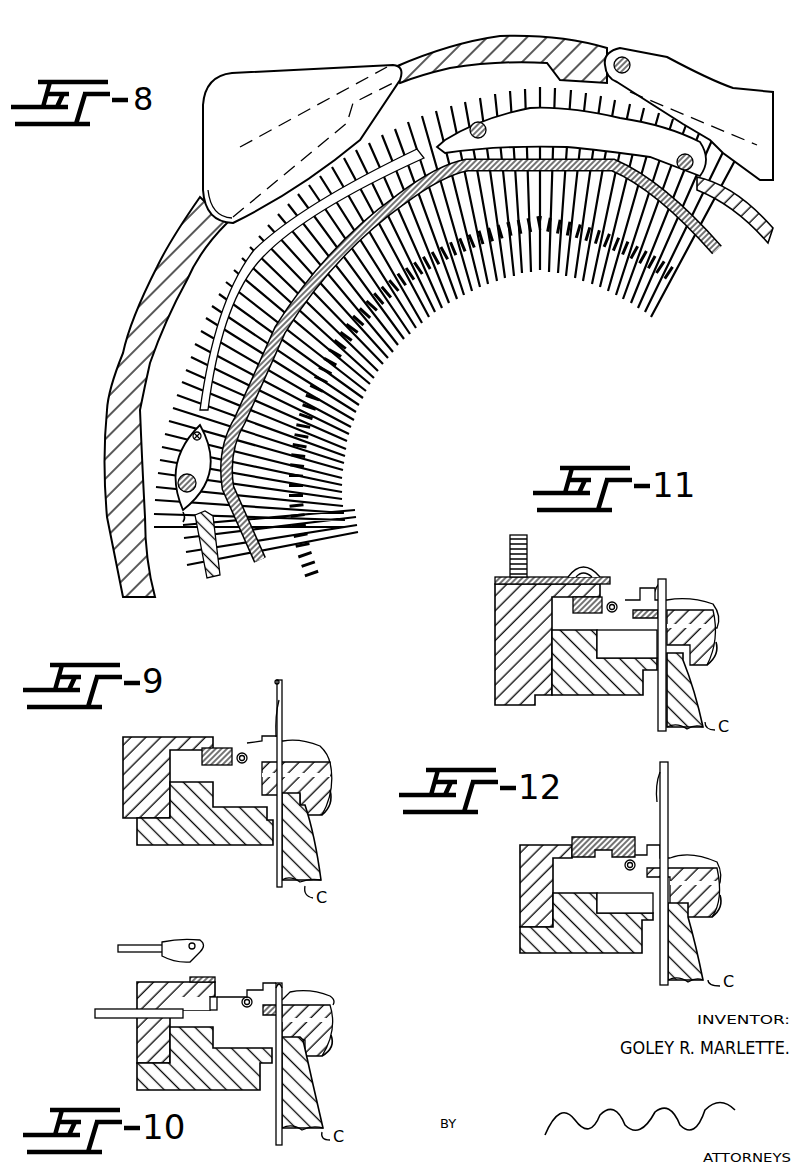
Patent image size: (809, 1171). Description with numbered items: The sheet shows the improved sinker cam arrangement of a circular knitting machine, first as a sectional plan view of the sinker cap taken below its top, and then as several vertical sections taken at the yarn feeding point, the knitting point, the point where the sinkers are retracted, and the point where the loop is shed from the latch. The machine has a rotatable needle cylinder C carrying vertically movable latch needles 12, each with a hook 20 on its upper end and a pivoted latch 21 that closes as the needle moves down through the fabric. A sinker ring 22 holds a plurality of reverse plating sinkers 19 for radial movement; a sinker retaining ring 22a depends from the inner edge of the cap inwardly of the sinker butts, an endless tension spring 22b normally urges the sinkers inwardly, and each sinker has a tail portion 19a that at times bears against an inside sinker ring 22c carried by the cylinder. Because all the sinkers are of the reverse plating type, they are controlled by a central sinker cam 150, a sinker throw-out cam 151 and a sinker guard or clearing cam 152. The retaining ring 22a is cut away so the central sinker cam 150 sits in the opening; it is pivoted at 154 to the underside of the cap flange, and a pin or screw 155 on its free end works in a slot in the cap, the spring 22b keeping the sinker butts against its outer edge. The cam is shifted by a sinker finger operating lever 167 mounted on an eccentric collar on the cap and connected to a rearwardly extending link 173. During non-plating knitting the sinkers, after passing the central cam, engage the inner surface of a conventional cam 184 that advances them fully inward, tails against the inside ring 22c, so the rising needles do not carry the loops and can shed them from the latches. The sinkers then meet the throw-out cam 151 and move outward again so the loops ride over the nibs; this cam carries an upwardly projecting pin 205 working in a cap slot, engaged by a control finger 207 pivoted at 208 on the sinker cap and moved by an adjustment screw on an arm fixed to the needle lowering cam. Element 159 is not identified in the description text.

In FIG. 9, the needles 12 is at (280, 872).
In FIG. 10, the needles 12 is at (277, 1130).
In FIG. 11, the needles 12 is at (660, 717).
In FIG. 12, the needles 12 is at (662, 977).
In FIG. 8, the reverse plating sinkers 19 is at (465, 302).
In FIG. 9, the reverse plating sinkers 19 is at (312, 749).
In FIG. 10, the reverse plating sinkers 19 is at (330, 995).
In FIG. 11, the reverse plating sinkers 19 is at (700, 601).
In FIG. 12, the reverse plating sinkers 19 is at (716, 862).
In FIG. 9, the tail portion 19a is at (303, 776).
In FIG. 10, the tail portion 19a is at (310, 1019).
In FIG. 11, the tail portion 19a is at (690, 626).
In FIG. 12, the tail portion 19a is at (695, 884).
In FIG. 9, the hook 20 is at (282, 680).
In FIG. 10, the hook 20 is at (279, 1064).
In FIG. 11, the hook 20 is at (668, 582).
In FIG. 12, the hook 20 is at (662, 764).
In FIG. 9, the pivoted latch 21 is at (276, 714).
In FIG. 11, the pivoted latch 21 is at (628, 620).
In FIG. 12, the pivoted latch 21 is at (657, 800).
In FIG. 8, the sinker ring 22 is at (458, 52).
In FIG. 9, the sinker ring 22 is at (123, 777).
In FIG. 10, the sinker ring 22 is at (137, 1042).
In FIG. 11, the sinker ring 22 is at (495, 619).
In FIG. 12, the sinker ring 22 is at (520, 876).
In FIG. 8, the sinker retaining ring 22a is at (420, 150).
In FIG. 10, the sinker retaining ring 22a is at (220, 998).
In FIG. 8, the endless tension spring 22b is at (717, 256).
In FIG. 9, the endless tension spring 22b is at (240, 752).
In FIG. 10, the endless tension spring 22b is at (250, 998).
In FIG. 11, the endless tension spring 22b is at (614, 600).
In FIG. 12, the endless tension spring 22b is at (625, 887).
In FIG. 9, the inside sinker ring 22c is at (327, 810).
In FIG. 10, the inside sinker ring 22c is at (332, 1052).
In FIG. 11, the inside sinker ring 22c is at (710, 666).
In FIG. 12, the inside sinker ring 22c is at (723, 920).
In FIG. 8, the central sinker cam 150 is at (590, 143).
In FIG. 9, the central sinker cam 150 is at (210, 765).
In FIG. 8, the sinker throw-out cam 151 is at (200, 470).
In FIG. 11, the sinker throw-out cam 151 is at (587, 630).
In FIG. 12, the sinker guard cam 152 is at (625, 838).
In FIG. 8, the pivotal connection 154 is at (676, 160).
In FIG. 8, the pin or screw 155 is at (487, 131).
In FIG. 10, the plate 159 is at (213, 977).
In FIG. 10, the sinker finger operating lever 167 is at (204, 944).
In FIG. 10, the link 173 is at (162, 942).
In FIG. 8, the conventional cam 184 is at (228, 134).
In FIG. 8, the pin 205 is at (183, 514).
In FIG. 11, the control finger 207 is at (548, 577).
In FIG. 11, the pivot 208 is at (584, 562).